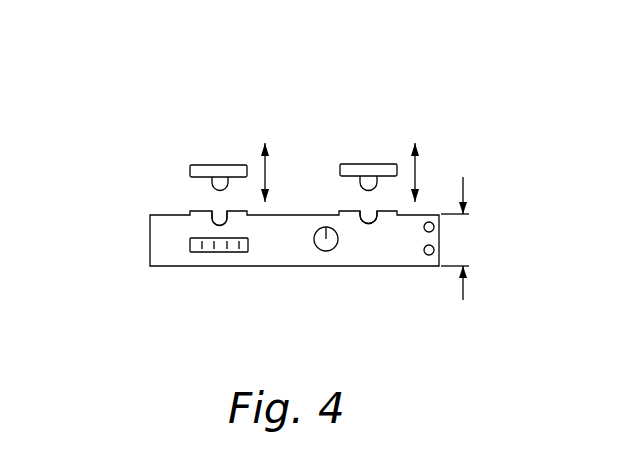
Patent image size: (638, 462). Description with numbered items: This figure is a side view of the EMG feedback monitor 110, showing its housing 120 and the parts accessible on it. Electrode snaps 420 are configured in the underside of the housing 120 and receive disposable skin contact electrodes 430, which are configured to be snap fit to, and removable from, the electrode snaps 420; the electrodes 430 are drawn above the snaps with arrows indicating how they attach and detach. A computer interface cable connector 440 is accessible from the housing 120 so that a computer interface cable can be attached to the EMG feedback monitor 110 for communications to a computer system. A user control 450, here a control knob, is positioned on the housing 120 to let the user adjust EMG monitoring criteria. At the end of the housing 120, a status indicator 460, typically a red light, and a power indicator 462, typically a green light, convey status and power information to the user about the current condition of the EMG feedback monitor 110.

The EMG feedback monitor 110 is at (447, 153).
The housing 120 is at (150, 242).
The electrode snaps 420 is at (220, 224).
The disposable skin contact electrodes 430 is at (218, 165).
The computer interface cable connector 440 is at (220, 252).
The user control 450 is at (326, 251).
The status indicator 460 is at (430, 222).
The power indicator 462 is at (429, 255).